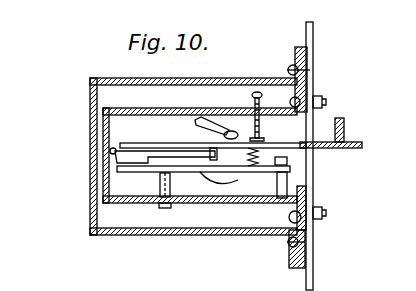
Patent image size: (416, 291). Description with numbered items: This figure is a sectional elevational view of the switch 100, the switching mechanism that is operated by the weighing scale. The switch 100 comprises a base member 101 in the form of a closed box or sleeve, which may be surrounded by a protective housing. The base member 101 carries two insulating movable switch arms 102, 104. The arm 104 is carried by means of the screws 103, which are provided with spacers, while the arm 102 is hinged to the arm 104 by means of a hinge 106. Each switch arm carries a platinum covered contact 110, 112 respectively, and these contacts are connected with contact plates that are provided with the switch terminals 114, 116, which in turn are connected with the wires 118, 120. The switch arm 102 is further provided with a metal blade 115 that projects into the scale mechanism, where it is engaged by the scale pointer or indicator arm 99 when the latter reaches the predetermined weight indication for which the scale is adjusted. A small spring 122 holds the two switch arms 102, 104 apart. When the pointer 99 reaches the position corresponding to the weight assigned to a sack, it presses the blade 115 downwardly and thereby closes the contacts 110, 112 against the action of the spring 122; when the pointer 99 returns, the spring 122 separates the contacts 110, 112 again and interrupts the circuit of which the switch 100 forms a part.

The pointer or indicator arm 99 is at (344, 128).
The switch 100 is at (170, 242).
The base member 101 is at (240, 199).
The switch arm 102 is at (304, 148).
The screws 103 is at (265, 92).
The switch arm 104 is at (296, 165).
The hinge 106 is at (110, 152).
The contact 110 is at (215, 148).
The contact 112 is at (170, 205).
The switch terminal 114 is at (252, 172).
The metal blade 115 is at (362, 144).
The switch terminal 116 is at (231, 130).
The wire 118 is at (198, 118).
The wire 120 is at (208, 190).
The spring 122 is at (290, 154).